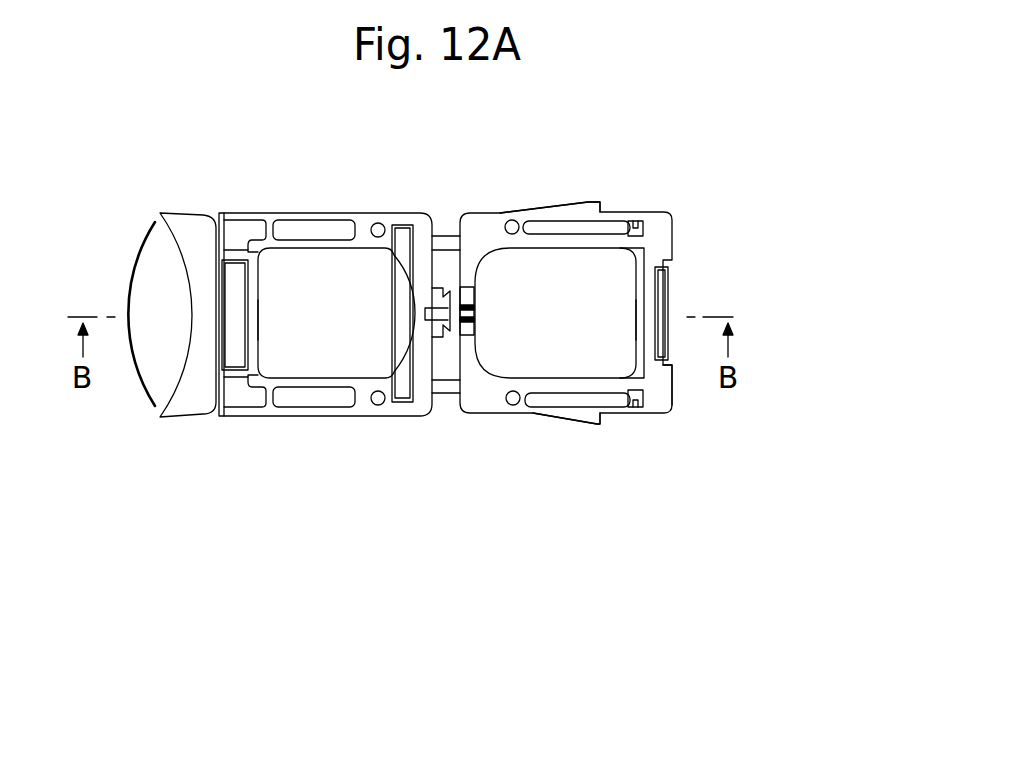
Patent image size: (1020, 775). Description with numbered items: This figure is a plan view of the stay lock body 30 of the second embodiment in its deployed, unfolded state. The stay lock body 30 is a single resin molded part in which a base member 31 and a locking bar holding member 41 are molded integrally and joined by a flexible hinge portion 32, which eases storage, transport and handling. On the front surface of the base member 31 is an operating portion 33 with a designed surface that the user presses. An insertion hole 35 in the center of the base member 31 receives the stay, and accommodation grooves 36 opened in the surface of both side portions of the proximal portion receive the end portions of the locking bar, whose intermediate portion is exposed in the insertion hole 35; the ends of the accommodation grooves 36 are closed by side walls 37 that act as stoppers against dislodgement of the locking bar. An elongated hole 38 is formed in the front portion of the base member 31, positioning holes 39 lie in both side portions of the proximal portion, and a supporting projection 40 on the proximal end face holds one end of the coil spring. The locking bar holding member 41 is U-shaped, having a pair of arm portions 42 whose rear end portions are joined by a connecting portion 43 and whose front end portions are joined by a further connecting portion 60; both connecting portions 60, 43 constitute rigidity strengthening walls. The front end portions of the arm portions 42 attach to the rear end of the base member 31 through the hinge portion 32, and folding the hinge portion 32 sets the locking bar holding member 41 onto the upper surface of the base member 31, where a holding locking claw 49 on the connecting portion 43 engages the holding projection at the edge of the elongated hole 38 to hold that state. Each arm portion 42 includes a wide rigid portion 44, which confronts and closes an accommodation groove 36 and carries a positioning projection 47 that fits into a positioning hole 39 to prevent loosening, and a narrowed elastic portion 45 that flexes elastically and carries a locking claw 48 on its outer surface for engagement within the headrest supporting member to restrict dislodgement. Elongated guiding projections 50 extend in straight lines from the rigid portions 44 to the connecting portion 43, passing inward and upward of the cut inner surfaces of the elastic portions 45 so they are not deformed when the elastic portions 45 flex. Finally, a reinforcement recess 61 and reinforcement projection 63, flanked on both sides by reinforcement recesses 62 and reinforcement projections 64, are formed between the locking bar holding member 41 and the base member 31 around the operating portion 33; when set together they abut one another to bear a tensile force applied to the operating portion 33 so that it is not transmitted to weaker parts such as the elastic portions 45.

The stay lock body 30 is at (200, 463).
The base member 31 is at (278, 418).
The hinge portion 32 is at (443, 388).
The operating portion 33 is at (157, 242).
The insertion hole 35 is at (308, 262).
The accommodation groove 36 is at (403, 262).
The side wall 37 is at (400, 224).
The elongated hole 38 is at (235, 282).
The positioning hole 39 is at (381, 406).
The supporting projection 40 is at (478, 283).
The locking bar holding member 41 is at (672, 216).
The arm portion 42 is at (533, 415).
The connecting portion 43 is at (668, 365).
The rigid portion 44 is at (482, 402).
The elastic portion 45 is at (617, 413).
The positioning projection 47 is at (508, 221).
The locking claw 48 is at (583, 200).
The holding locking claw 49 is at (667, 288).
The elongated guiding projection 50 is at (583, 251).
The connecting portion 60 is at (468, 333).
The reinforcement recess 61 is at (640, 328).
The reinforcement recess 62 is at (251, 235).
The reinforcement projection 63 is at (253, 320).
The reinforcement projection 64 is at (637, 222).